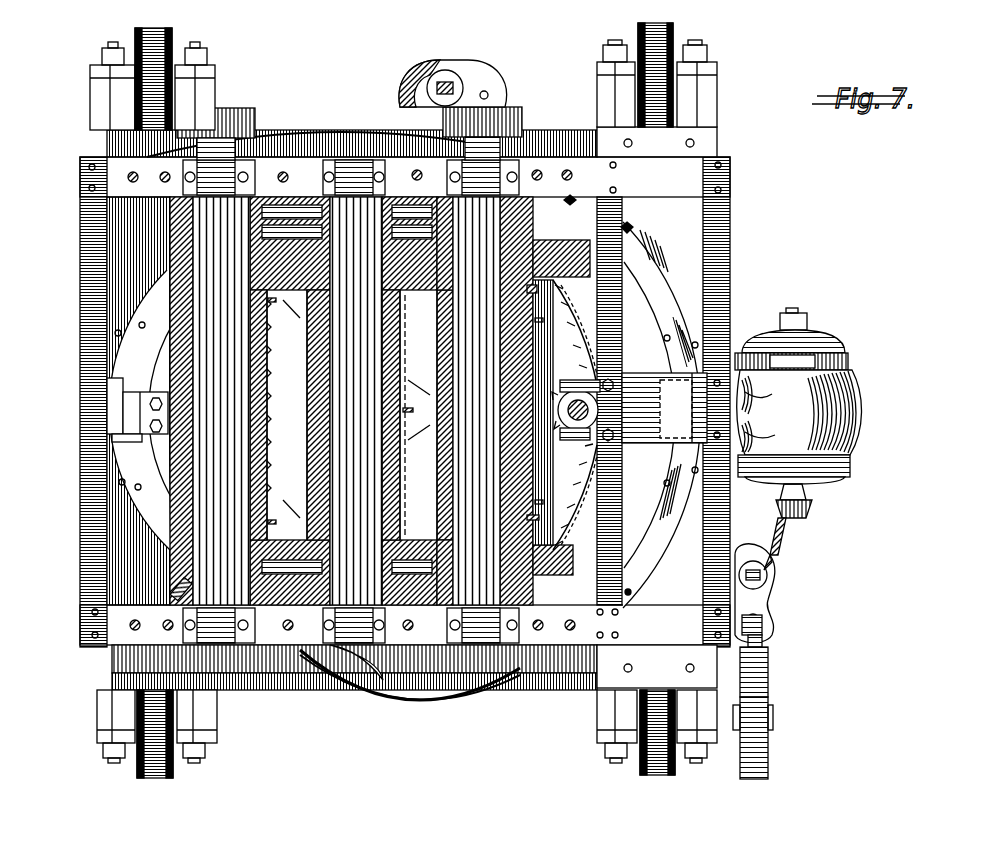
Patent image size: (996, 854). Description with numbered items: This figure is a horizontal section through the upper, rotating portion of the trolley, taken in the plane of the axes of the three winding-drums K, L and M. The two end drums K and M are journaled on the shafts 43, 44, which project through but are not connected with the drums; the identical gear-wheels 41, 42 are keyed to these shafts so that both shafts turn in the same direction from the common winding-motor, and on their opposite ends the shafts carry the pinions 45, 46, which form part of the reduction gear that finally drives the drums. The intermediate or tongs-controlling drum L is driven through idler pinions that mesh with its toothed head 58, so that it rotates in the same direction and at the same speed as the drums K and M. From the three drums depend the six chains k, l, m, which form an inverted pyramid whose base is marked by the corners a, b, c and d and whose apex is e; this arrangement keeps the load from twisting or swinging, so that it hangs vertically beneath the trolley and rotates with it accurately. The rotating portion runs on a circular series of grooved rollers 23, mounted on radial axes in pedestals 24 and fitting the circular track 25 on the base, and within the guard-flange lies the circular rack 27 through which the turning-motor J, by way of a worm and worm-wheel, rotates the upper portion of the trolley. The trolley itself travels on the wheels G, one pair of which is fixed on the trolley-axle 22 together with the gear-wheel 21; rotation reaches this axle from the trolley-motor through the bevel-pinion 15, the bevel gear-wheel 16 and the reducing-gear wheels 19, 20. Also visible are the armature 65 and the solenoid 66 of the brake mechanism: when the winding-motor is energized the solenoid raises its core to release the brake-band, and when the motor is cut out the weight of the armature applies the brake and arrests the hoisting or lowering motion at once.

The trolley wheels G is at (135, 35).
The turning-motor J is at (798, 404).
The winding-drum K is at (262, 385).
The controlling-drum L is at (418, 415).
The winding-drum M is at (538, 378).
The chains k is at (290, 320).
The chains l is at (408, 316).
The chains m is at (476, 409).
The base corner of chain pyramid a is at (527, 289).
The base corner of chain pyramid b is at (527, 517).
The base corner of chain pyramid c is at (270, 512).
The base corner of chain pyramid d is at (283, 291).
The apex of chain pyramid e is at (395, 425).
The bevel-pinion 15 is at (815, 507).
The bevel gear-wheel 16 is at (785, 538).
The reducing-gear 19 is at (767, 637).
The reducing-gear 20 is at (763, 640).
The gear-wheel 21 is at (765, 690).
The trolley-axle 22 is at (768, 718).
The grooved rollers 23 is at (115, 378).
The pedestals 24 is at (123, 403).
The circular track 25 is at (115, 440).
The circular rack 27 is at (196, 588).
The gear-wheel 41 is at (278, 688).
The gear-wheel 42 is at (473, 665).
The shaft 43 is at (217, 442).
The shaft 44 is at (487, 458).
The pinion 45 is at (233, 133).
The pinion 46 is at (500, 127).
The toothed head 58 is at (432, 600).
The armature 65 is at (760, 575).
The solenoid 66 is at (788, 606).